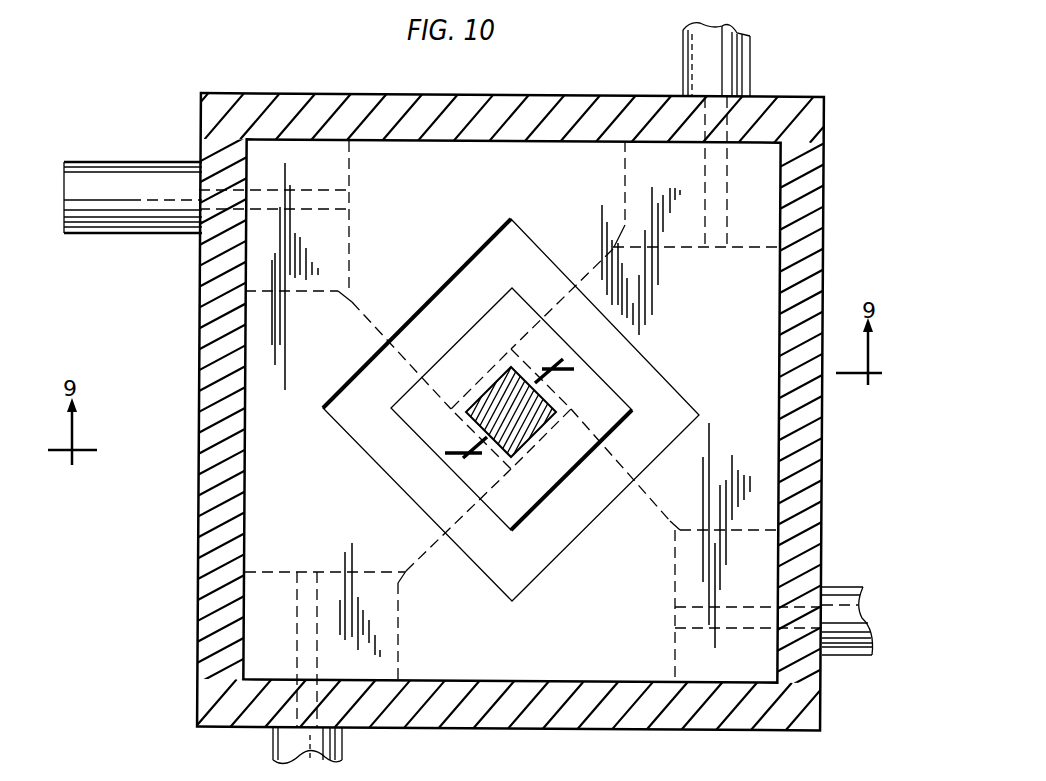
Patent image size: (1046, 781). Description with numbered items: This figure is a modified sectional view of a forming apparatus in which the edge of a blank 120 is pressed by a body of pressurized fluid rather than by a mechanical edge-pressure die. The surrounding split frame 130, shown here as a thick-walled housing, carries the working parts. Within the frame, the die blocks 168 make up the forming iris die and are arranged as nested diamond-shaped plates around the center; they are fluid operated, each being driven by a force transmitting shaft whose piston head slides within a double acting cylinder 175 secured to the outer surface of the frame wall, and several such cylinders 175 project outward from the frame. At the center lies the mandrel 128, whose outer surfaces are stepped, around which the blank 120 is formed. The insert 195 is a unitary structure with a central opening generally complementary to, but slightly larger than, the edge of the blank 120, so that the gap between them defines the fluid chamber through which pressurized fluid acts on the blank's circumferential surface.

The blank 120 is at (477, 475).
The mandrel 128 is at (523, 447).
The split frame 130 is at (194, 601).
The die blocks 168 is at (442, 310).
The double acting cylinder 175 is at (683, 42).
The insert 195 is at (634, 640).